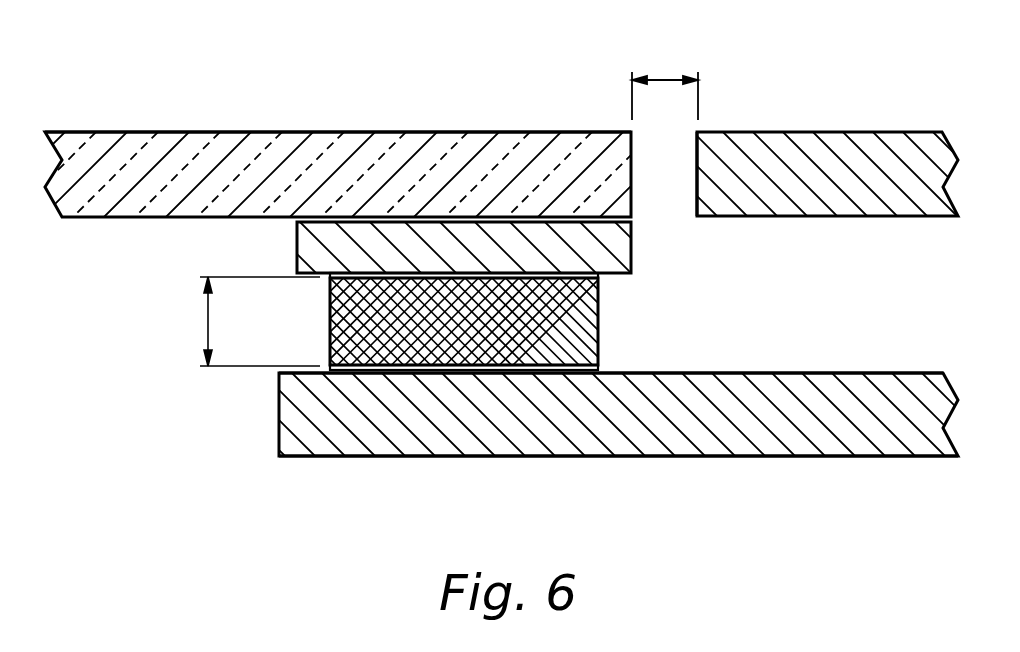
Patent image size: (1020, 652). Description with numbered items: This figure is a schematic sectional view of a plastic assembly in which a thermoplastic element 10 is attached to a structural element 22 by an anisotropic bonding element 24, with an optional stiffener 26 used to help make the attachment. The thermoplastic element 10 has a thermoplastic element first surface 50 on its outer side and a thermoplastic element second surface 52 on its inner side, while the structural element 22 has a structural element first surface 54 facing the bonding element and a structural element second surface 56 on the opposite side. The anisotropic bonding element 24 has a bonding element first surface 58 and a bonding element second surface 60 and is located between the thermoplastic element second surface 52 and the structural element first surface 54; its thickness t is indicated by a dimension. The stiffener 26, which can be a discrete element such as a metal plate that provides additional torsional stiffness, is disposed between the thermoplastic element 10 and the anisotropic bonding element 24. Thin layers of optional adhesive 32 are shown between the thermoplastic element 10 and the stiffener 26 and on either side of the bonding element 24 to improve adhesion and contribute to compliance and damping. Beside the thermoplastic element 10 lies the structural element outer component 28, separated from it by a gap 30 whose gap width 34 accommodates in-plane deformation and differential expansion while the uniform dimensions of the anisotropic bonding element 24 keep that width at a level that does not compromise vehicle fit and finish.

The thermoplastic element 10 is at (200, 132).
The structural element 22 is at (827, 456).
The anisotropic bonding element 24 is at (330, 322).
The stiffener 26 is at (297, 238).
The structural element outer component 28 is at (823, 132).
The gap 30 is at (672, 155).
The adhesive 32 is at (465, 217).
The gap width 34 is at (665, 75).
The thermoplastic element first surface 50 is at (522, 132).
The thermoplastic element second surface 52 is at (563, 215).
The structural element first surface 54 is at (750, 373).
The structural element second surface 56 is at (715, 456).
The bonding element first surface 58 is at (393, 277).
The bonding element second surface 60 is at (460, 371).
The thickness of the anisotropic bonding element t is at (208, 322).